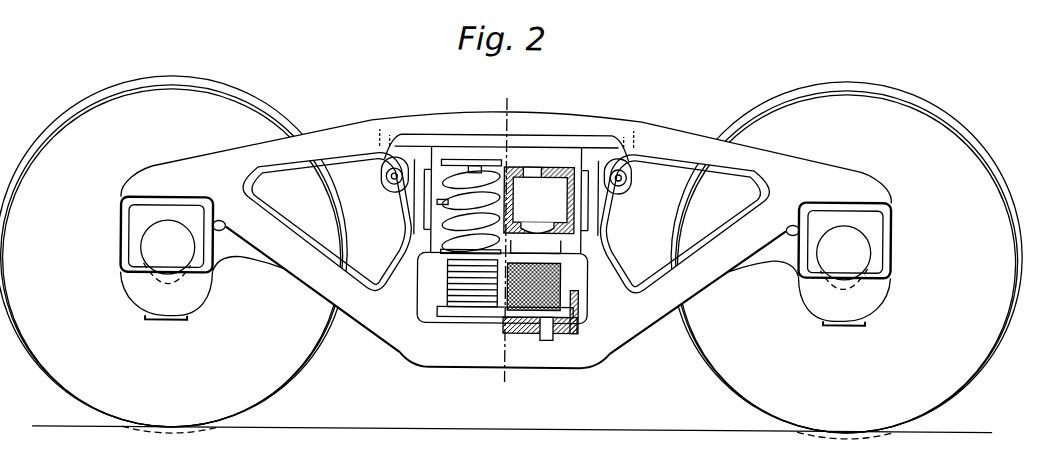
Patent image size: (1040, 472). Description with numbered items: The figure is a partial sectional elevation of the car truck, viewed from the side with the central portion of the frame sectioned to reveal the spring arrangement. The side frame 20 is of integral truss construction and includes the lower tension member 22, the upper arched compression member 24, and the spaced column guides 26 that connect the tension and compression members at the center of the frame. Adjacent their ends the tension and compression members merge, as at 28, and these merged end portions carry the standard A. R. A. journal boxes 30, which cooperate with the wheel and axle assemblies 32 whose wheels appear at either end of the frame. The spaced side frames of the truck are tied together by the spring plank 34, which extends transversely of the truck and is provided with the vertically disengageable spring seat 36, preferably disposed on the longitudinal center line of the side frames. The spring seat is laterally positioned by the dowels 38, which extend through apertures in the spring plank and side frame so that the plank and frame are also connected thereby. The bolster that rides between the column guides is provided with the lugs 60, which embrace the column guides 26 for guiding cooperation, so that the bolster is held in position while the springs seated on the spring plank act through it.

The side frame 20 is at (389, 348).
The tension member 22 is at (346, 318).
The compression member 24 is at (345, 131).
The column guides 26 is at (423, 236).
The merged end portion 28 is at (151, 173).
The journal boxes 30 is at (133, 293).
The wheel and axle assemblies 32 is at (131, 96).
The spring plank 34 is at (462, 322).
The spring seat 36 is at (520, 333).
The dowels 38 is at (553, 340).
The lugs 60 is at (435, 203).